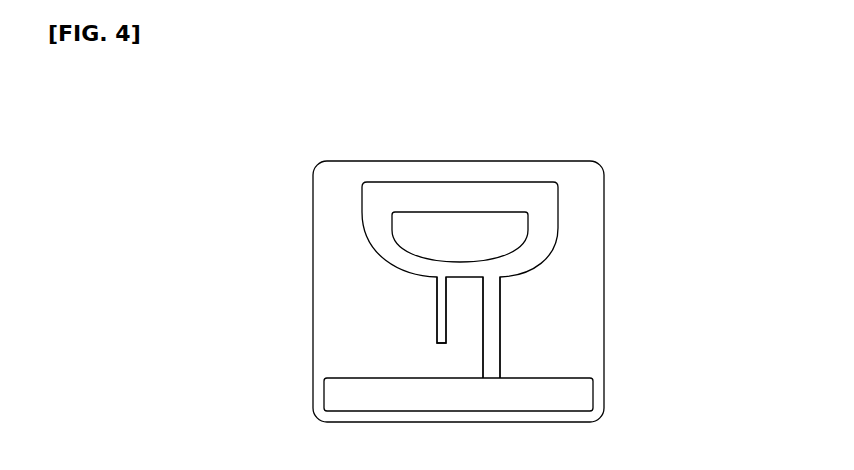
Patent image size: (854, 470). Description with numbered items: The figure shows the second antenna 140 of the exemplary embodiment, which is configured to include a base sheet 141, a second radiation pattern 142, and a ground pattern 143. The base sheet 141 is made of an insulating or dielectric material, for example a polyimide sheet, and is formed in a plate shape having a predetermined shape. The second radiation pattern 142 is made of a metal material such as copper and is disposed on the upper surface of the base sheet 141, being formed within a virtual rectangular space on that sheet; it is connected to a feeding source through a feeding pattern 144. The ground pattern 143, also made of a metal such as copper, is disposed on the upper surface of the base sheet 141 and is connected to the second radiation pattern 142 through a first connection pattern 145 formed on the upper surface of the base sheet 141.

The second antenna 140 is at (280, 98).
The base sheet 141 is at (604, 258).
The second radiation pattern 142 is at (460, 182).
The ground pattern 143 is at (593, 393).
The feeding pattern 144 is at (437, 309).
The first connection pattern 145 is at (500, 327).